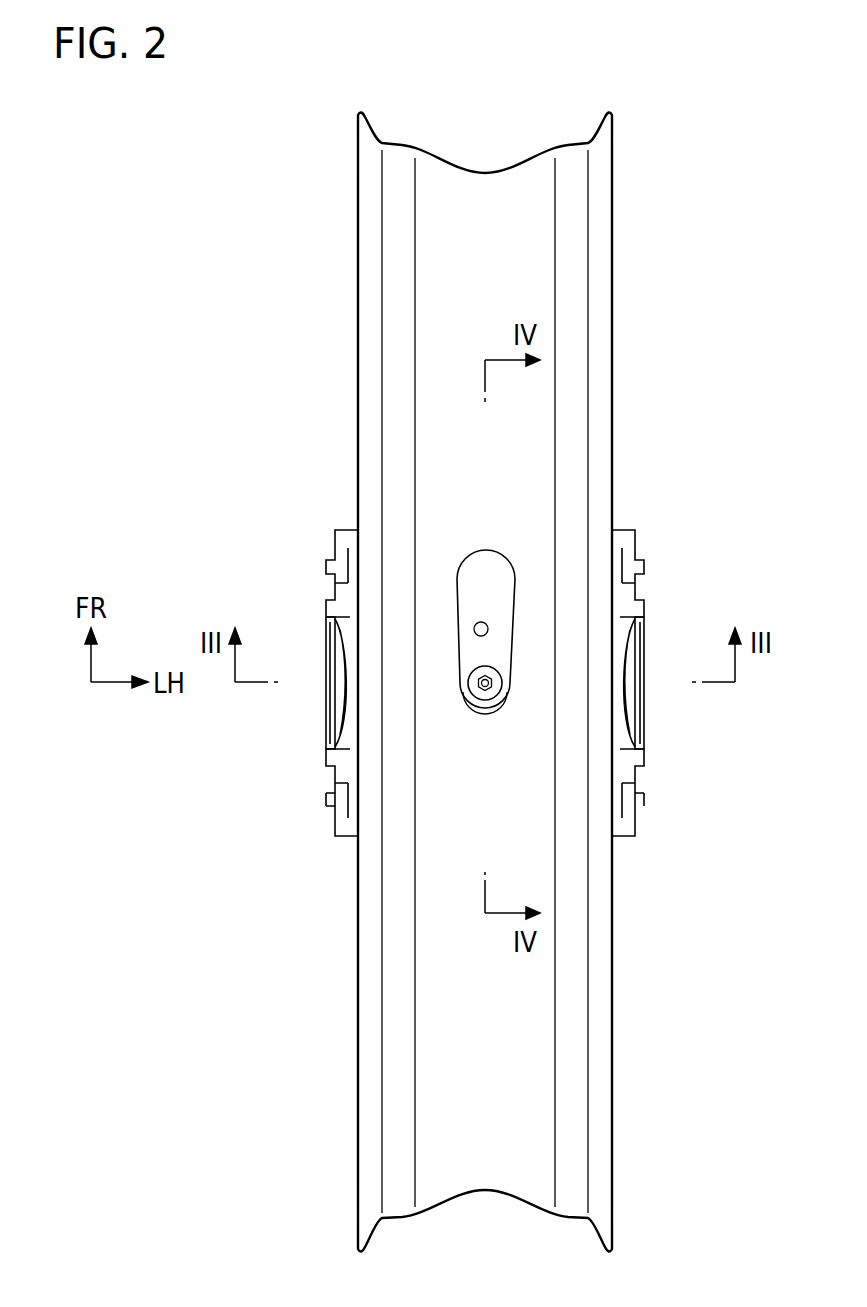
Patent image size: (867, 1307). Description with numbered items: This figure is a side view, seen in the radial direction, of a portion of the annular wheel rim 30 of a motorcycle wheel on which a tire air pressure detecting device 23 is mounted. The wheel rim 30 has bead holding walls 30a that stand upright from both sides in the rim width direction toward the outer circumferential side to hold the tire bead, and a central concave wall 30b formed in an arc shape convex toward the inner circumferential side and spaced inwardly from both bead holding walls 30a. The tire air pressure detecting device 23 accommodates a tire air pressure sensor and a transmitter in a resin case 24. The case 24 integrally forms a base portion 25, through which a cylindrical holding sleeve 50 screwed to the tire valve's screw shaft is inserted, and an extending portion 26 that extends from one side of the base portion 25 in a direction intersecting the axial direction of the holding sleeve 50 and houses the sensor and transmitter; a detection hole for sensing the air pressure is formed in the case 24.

The wheel rim 30 is at (487, 672).
The bead holding wall 30a is at (370, 297).
The central concave wall 30b is at (485, 186).
The tire air pressure detecting device 23 is at (370, 591).
The case 24 is at (361, 668).
The base portion 25 is at (472, 705).
The extending portion 26 is at (472, 598).
The holding sleeve 50 is at (496, 688).